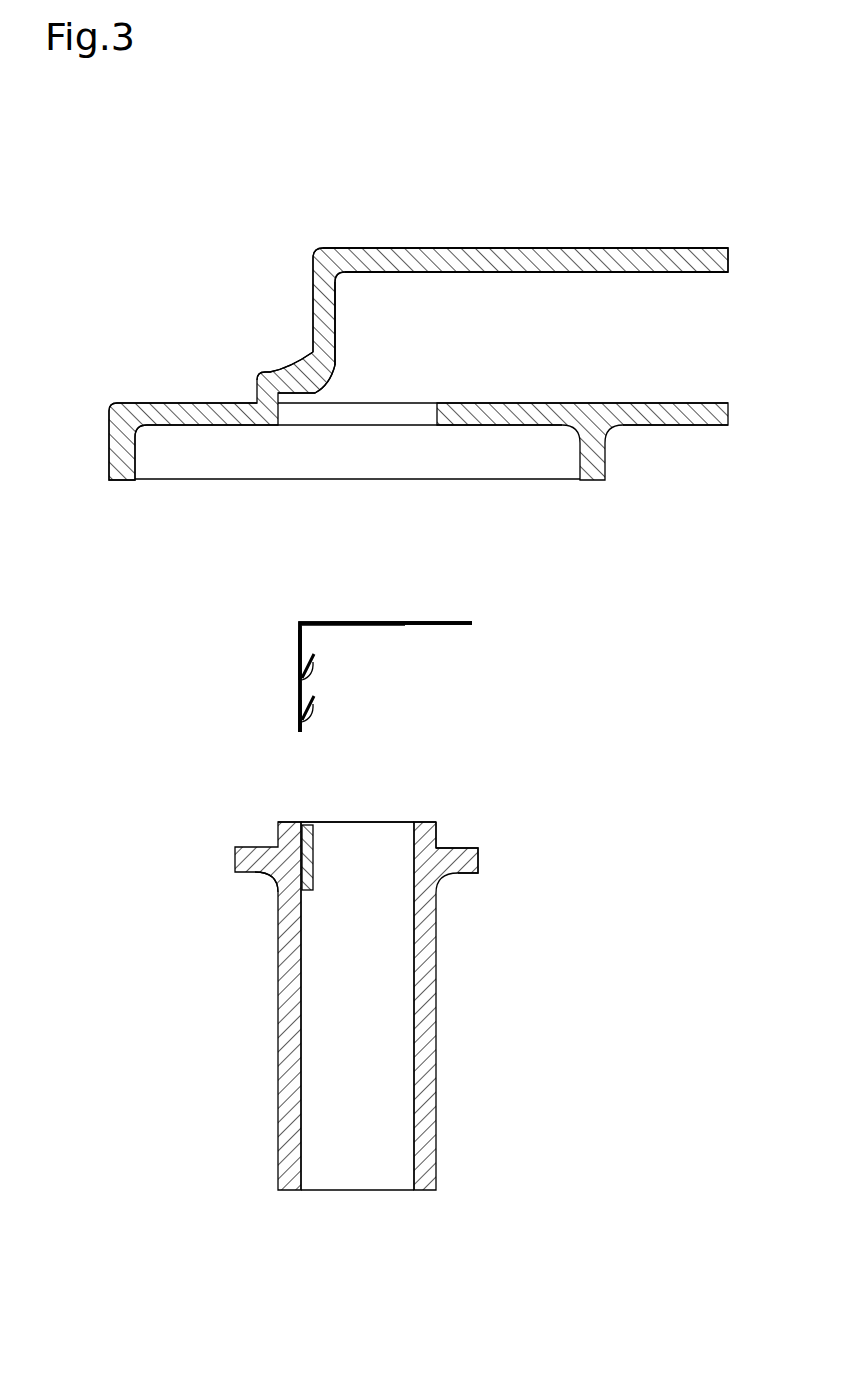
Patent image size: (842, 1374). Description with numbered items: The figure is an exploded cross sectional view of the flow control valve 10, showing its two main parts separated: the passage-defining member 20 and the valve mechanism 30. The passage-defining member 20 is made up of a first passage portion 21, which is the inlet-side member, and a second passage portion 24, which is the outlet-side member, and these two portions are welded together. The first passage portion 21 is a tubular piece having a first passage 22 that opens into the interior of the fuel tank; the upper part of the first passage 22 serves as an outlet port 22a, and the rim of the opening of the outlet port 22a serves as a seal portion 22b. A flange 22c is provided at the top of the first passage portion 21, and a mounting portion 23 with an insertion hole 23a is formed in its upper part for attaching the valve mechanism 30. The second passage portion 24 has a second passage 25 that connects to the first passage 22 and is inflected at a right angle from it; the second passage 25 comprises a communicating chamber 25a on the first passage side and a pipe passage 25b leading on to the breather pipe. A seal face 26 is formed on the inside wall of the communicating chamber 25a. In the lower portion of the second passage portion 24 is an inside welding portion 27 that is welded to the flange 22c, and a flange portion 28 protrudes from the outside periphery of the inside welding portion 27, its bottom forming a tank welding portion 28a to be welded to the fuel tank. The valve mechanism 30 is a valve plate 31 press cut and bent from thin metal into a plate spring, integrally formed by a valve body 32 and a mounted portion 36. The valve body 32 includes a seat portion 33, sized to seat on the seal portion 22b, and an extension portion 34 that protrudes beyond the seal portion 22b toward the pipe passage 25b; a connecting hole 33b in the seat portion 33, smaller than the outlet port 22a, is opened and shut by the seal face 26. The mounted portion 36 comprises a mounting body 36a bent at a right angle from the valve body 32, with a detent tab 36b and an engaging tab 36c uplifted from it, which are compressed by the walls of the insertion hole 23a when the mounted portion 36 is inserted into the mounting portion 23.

The flow control valve 10 is at (282, 232).
The passage-defining member 20 is at (143, 370).
The first passage portion 21 is at (278, 1003).
The first passage 22 is at (372, 1037).
The outlet port 22a is at (373, 822).
The seal portion 22b is at (423, 821).
The flange 22c is at (462, 848).
The mounting portion 23 is at (307, 837).
The insertion hole 23a is at (297, 877).
The second passage portion 24 is at (313, 302).
The second passage 25 is at (604, 330).
The communicating chamber 25a is at (425, 359).
The pipe passage 25b is at (587, 359).
The seal face 26 is at (259, 377).
The inside welding portion 27 is at (260, 426).
The flange portion 28 is at (152, 403).
The tank welding portion 28a is at (122, 480).
The valve mechanism 30 is at (156, 620).
The valve plate 31 is at (300, 623).
The valve body 32 is at (472, 560).
The seat portion 33 is at (372, 622).
The connecting hole 33b is at (330, 626).
The extension portion 34 is at (452, 622).
The mounted portion 36 is at (223, 632).
The mounting body 36a is at (300, 647).
The detent tab 36b is at (300, 728).
The engaging tab 36c is at (300, 690).